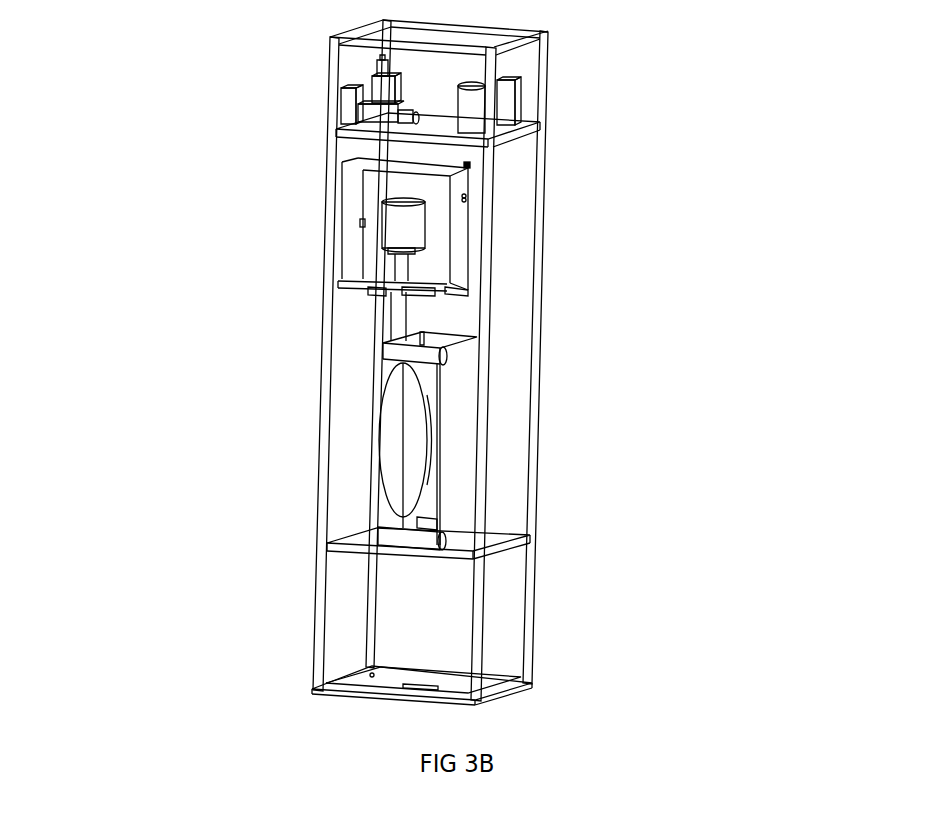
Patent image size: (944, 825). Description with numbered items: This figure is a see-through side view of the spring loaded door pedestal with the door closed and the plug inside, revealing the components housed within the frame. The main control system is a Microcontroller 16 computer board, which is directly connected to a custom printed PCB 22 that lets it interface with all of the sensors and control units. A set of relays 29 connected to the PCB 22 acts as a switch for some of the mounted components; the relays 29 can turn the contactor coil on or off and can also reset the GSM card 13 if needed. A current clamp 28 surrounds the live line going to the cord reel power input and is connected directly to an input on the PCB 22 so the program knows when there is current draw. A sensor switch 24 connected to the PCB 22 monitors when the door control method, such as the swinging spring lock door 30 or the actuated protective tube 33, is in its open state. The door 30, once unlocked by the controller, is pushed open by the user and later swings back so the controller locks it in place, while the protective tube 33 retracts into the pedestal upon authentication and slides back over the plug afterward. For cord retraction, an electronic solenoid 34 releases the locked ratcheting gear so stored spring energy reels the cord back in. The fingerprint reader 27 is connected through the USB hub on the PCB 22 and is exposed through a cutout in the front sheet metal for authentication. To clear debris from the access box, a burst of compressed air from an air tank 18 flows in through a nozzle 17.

The 3G GSM card 13 is at (378, 86).
The relays 29 is at (343, 106).
The air tank 18 is at (343, 126).
The protective tube 33 is at (355, 165).
The electronic solenoid 34 is at (361, 223).
The fingerprint reader 27 is at (377, 287).
The current clamp 28 is at (373, 292).
The Microcontroller 16 is at (512, 97).
The nozzle 17 is at (460, 117).
The switch 24 is at (482, 140).
The swinging spring lock door 30 is at (492, 148).
The custom printed PCB 22 is at (470, 166).